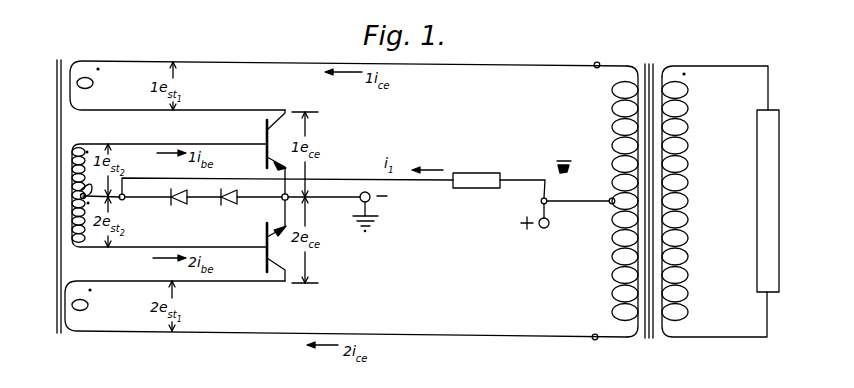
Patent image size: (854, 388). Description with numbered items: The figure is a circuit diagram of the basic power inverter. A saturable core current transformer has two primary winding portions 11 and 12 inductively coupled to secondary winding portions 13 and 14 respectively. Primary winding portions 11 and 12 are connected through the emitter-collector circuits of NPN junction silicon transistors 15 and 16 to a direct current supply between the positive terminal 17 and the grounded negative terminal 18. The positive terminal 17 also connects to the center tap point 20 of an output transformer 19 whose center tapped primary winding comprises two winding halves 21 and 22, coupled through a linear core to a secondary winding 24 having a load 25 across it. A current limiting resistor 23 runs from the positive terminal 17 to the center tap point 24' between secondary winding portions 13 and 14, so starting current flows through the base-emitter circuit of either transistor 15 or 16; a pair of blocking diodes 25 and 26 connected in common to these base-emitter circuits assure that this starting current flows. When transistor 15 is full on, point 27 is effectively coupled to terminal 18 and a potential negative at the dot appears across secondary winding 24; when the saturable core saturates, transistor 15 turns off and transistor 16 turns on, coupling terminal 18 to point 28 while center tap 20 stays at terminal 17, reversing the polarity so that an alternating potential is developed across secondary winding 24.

The primary winding portion 11 is at (93, 82).
The primary winding portion 12 is at (88, 304).
The secondary winding portion 13 is at (71, 158).
The secondary winding portion 14 is at (71, 223).
The NPN junction transistor 15 is at (265, 129).
The NPN junction transistor 16 is at (265, 236).
The positive terminal 17 is at (550, 225).
The grounded negative terminal 18 is at (360, 203).
The output transformer 19 is at (660, 66).
The center tap point 20 is at (610, 199).
The primary winding half 21 is at (612, 128).
The primary winding half 22 is at (612, 278).
The current limiting resistor 23 is at (478, 181).
The secondary winding 24 is at (715, 201).
The center tap point 24' is at (55, 192).
The blocking diode 25 is at (794, 191).
The blocking diode 26 is at (248, 212).
The point 27 is at (598, 62).
The point 28 is at (595, 341).